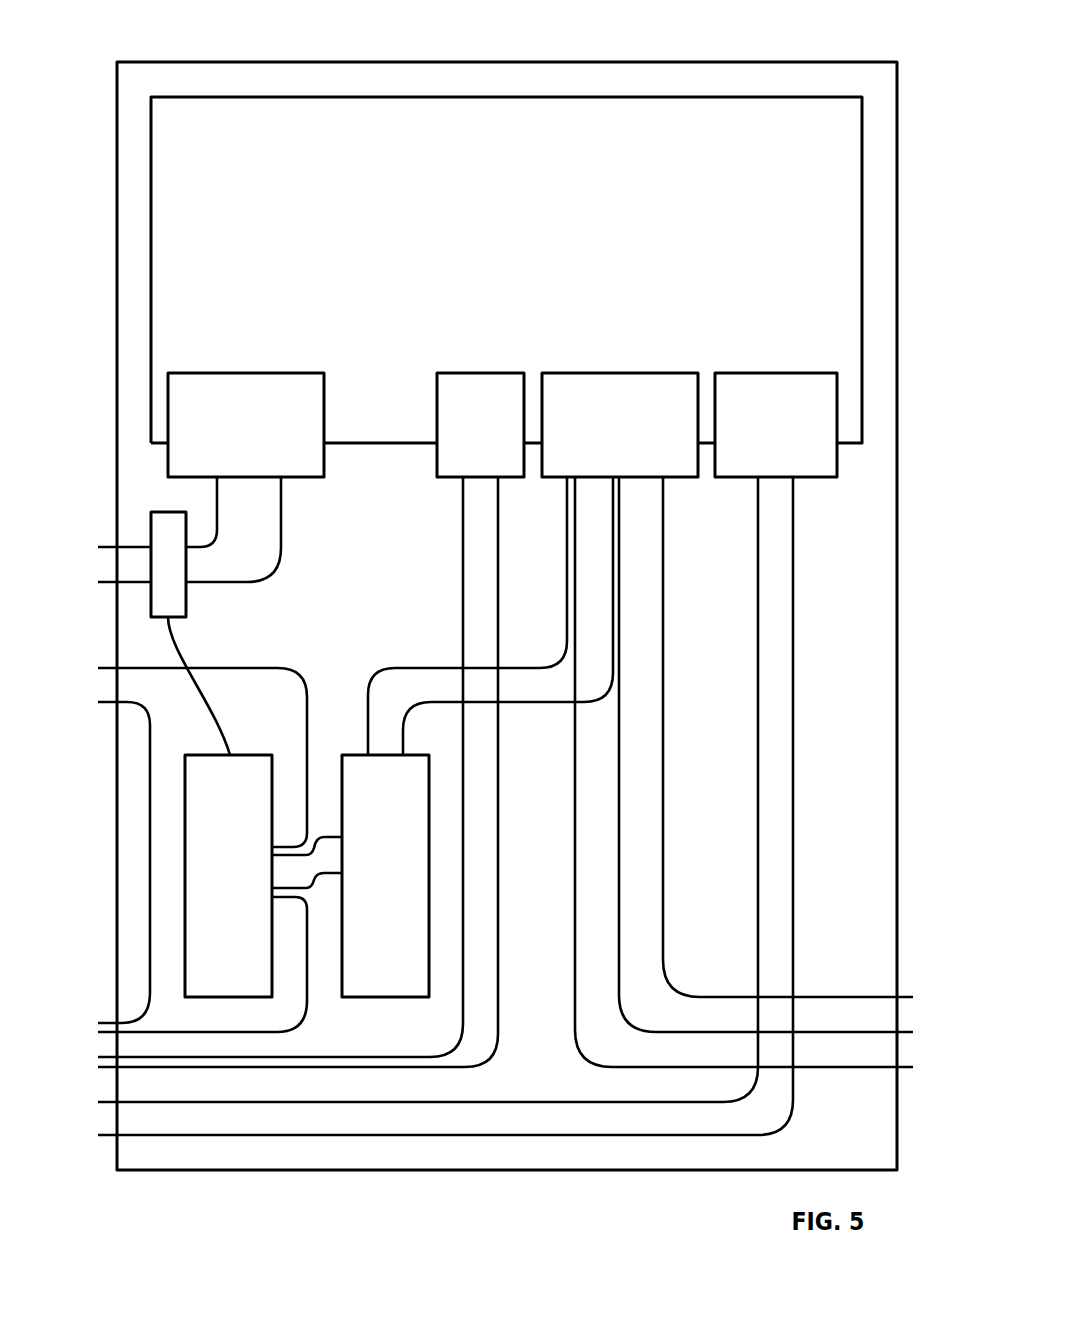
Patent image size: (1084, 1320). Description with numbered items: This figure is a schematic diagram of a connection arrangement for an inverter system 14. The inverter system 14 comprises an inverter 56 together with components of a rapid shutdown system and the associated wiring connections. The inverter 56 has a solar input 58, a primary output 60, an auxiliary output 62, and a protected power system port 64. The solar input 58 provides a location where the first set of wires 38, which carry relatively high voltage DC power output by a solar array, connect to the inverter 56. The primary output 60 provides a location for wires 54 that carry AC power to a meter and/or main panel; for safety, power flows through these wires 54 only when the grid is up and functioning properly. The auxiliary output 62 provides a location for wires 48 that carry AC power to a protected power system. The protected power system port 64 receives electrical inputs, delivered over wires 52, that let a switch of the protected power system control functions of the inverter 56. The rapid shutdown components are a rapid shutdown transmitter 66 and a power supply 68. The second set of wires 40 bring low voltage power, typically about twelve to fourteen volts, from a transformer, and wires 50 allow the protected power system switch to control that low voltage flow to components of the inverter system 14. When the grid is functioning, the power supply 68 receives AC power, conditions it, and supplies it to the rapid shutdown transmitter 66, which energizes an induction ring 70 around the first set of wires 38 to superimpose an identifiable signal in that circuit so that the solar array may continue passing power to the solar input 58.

The inverter system 14 is at (697, 44).
The first set of wires 38 is at (98, 537).
The second set of wires 40 is at (98, 658).
The wires 48 is at (98, 1092).
The wires 50 is at (119, 1032).
The wires 52 is at (108, 1067).
The wires 54 is at (913, 988).
The inverter 56 is at (492, 294).
The solar input 58 is at (297, 383).
The primary output 60 is at (667, 383).
The auxiliary output 62 is at (775, 383).
The protected power system port 64 is at (510, 383).
The rapid shutdown transmitter 66 is at (242, 901).
The power supply 68 is at (372, 914).
The induction ring 70 is at (165, 520).